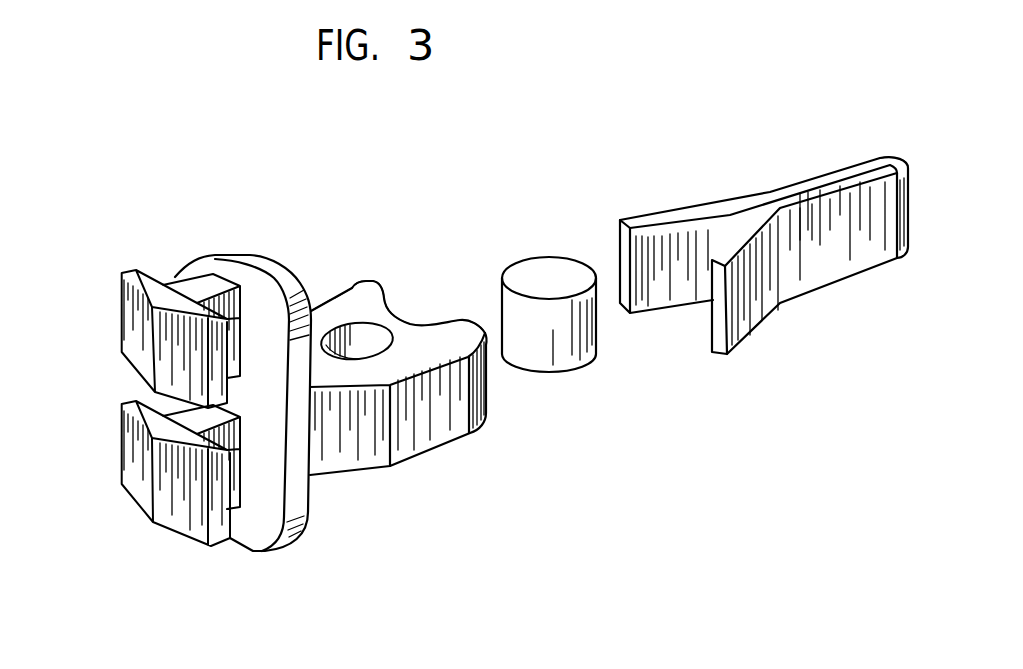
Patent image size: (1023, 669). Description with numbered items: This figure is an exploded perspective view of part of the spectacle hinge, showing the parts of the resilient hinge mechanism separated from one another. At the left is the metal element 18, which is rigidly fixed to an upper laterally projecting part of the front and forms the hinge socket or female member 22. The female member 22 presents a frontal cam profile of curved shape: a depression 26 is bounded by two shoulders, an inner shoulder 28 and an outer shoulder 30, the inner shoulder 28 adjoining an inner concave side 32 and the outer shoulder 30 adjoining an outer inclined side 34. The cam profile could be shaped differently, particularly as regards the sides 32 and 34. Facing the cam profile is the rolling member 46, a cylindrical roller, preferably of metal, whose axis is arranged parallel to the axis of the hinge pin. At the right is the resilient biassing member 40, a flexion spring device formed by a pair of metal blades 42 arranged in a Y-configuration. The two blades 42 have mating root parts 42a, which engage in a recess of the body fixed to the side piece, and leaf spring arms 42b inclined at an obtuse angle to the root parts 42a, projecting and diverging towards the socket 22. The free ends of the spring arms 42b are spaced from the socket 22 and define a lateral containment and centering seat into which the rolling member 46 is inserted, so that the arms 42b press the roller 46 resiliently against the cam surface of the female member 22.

The metal element 18 is at (316, 499).
The hinge socket or female member 22 is at (352, 298).
The depression 26 is at (407, 312).
The inner shoulder 28 is at (375, 284).
The outer shoulder 30 is at (462, 320).
The inner concave side 32 is at (325, 296).
The outer inclined side 34 is at (385, 448).
The resilient biassing member 40 is at (780, 218).
The metal blades 42 is at (733, 198).
The root parts 42a is at (910, 176).
The leaf spring arms 42b is at (668, 296).
The rolling member 46 is at (547, 268).